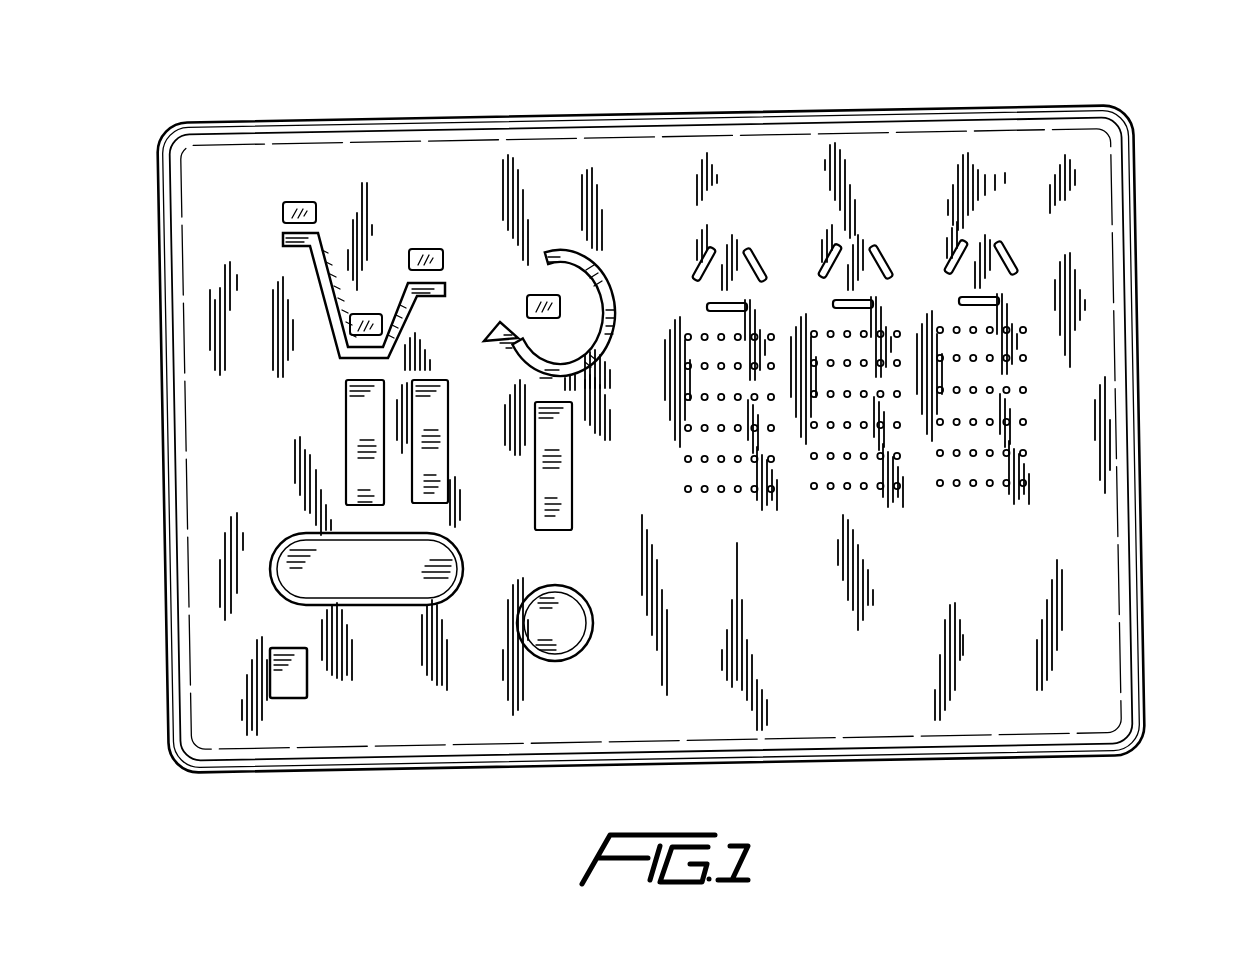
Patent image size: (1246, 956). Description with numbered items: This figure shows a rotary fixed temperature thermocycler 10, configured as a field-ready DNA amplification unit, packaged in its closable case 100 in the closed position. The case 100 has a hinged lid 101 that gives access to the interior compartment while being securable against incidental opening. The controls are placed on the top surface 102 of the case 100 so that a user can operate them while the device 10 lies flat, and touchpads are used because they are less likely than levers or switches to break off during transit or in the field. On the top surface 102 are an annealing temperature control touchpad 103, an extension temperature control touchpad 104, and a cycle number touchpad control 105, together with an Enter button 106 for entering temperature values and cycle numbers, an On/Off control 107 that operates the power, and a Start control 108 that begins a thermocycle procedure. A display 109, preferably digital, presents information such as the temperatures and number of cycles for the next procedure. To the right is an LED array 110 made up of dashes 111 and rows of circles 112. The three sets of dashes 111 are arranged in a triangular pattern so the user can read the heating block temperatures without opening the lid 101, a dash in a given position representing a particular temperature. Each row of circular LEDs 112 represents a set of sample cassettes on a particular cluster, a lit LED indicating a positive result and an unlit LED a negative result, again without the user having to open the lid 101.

The rotary fixed temperature thermocycler 10 is at (1119, 75).
The closable case 100 is at (1136, 141).
The hinged lid 101 is at (218, 122).
The top surface 102 is at (267, 152).
The annealing temperature control touchpad 103 is at (352, 398).
The extension temperature control touchpad 104 is at (424, 460).
The cycle number touchpad control 105 is at (557, 470).
The Enter button 106 is at (370, 582).
The On/Off control 107 is at (290, 700).
The Start control 108 is at (567, 638).
The display 109 is at (428, 249).
The LED array 110 is at (959, 343).
The dashes 111 is at (1005, 243).
The rows of circles 112 is at (1023, 422).